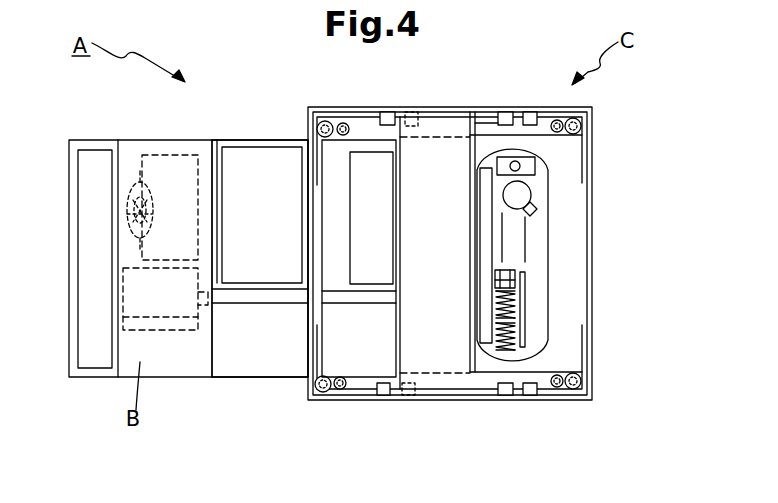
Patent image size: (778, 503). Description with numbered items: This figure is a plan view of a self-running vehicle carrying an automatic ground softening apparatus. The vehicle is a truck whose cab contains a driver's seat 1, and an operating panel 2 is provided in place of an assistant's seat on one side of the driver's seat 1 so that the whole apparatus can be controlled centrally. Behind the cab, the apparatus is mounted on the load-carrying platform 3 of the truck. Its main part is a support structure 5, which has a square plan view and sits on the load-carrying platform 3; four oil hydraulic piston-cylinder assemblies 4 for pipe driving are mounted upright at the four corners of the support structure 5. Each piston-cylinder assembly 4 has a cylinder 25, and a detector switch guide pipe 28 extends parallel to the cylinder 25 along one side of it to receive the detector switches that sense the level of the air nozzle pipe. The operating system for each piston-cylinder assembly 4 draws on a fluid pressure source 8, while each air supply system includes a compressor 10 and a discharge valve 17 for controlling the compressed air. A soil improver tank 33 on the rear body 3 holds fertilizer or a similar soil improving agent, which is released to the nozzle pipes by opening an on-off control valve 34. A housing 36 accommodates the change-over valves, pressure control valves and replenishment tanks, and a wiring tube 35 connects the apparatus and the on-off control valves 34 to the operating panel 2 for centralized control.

The driver's seat 1 is at (167, 178).
The operating panel 2 is at (158, 295).
The load-carrying platform 3 is at (270, 358).
The oil hydraulic piston-cylinder assembly 4 is at (325, 121).
The support structure 5 is at (583, 232).
The fluid pressure source 8 is at (362, 204).
The compressor 10 is at (510, 232).
The discharge valve 17 is at (410, 112).
The cylinder 25 is at (318, 124).
The detector switch guide pipe 28 is at (344, 122).
The soil improver tank 33 is at (256, 160).
The on-off control valve 34 is at (384, 112).
The wiring tube 35 is at (268, 298).
The housing 36 is at (423, 302).